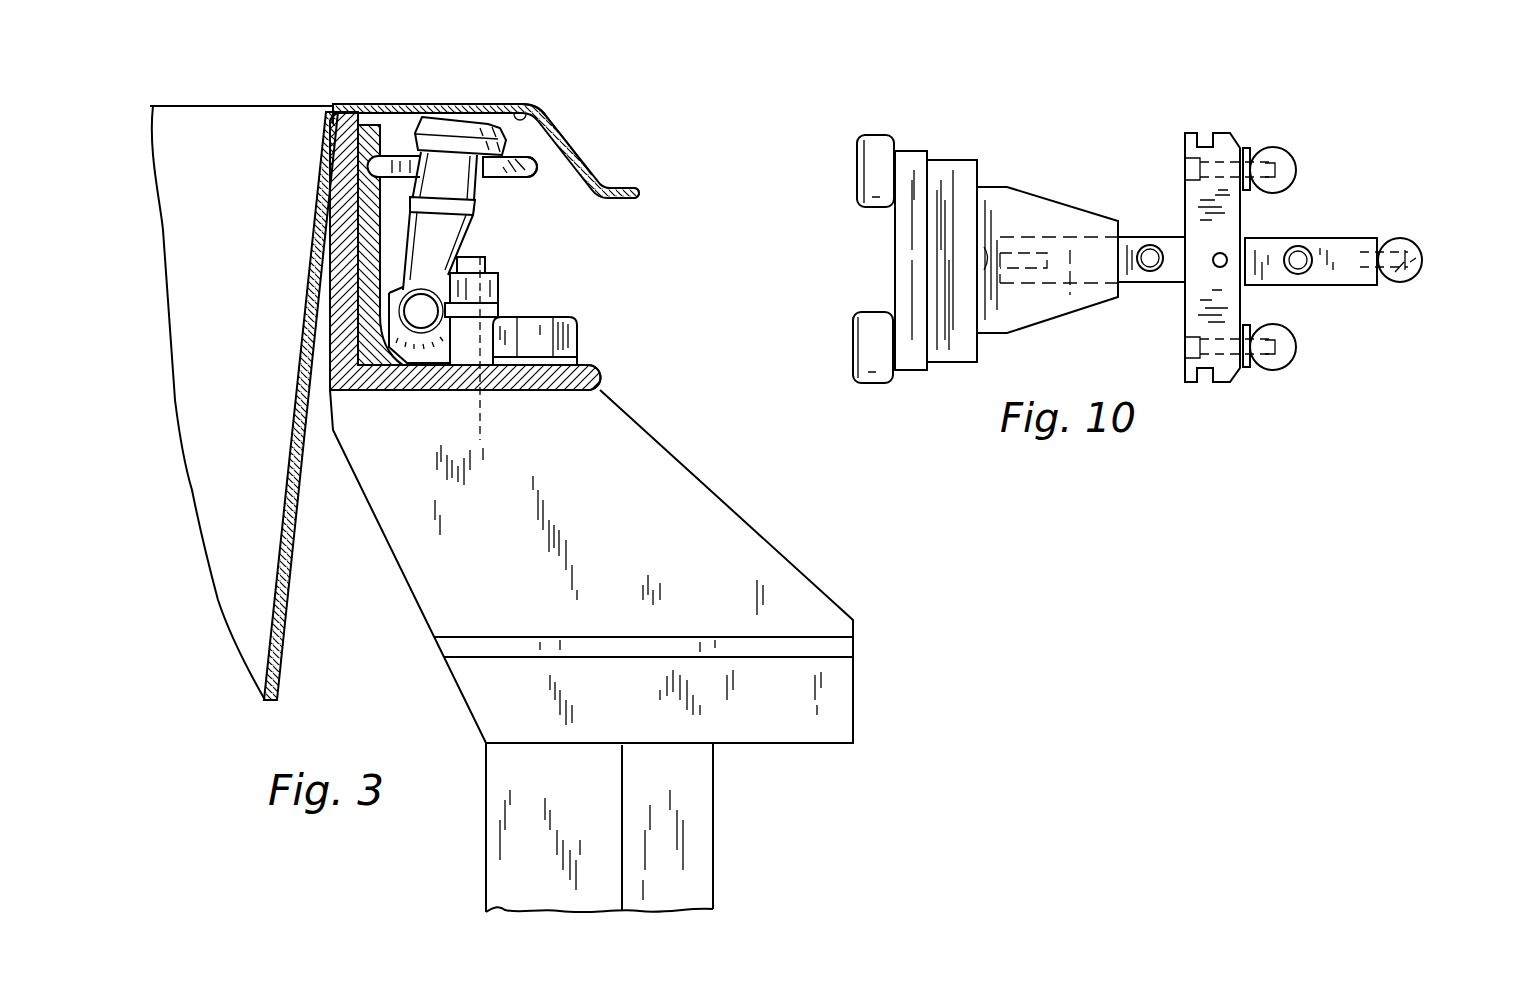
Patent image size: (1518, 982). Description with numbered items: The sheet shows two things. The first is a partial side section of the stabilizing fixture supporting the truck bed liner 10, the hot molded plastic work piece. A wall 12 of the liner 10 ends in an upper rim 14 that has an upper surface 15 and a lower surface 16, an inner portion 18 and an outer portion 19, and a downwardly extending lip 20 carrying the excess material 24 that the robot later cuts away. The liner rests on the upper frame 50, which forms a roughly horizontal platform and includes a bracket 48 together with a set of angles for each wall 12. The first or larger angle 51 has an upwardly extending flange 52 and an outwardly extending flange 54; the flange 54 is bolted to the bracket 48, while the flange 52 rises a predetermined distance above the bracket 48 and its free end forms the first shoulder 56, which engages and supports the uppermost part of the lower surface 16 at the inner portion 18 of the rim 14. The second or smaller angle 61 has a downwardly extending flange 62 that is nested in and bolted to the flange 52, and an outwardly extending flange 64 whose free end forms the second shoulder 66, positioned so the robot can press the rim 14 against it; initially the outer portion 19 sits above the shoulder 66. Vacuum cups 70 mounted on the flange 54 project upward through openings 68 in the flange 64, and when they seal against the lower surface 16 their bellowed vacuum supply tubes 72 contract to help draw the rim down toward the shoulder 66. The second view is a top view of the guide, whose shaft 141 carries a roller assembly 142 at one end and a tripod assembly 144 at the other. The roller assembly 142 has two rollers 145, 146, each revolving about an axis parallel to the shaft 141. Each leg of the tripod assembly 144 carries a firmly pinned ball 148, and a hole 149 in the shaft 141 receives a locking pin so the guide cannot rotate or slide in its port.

In FIG. 3, the truck bed liner 10 is at (298, 281).
In FIG. 3, the wall 12 is at (303, 385).
In FIG. 3, the upper rim 14 is at (380, 108).
In FIG. 3, the upper surface 15 is at (463, 104).
In FIG. 3, the lower surface 16 is at (532, 107).
In FIG. 3, the inner portion 18 is at (353, 110).
In FIG. 3, the outer portion 19 is at (548, 113).
In FIG. 3, the downwardly extending lip 20 is at (580, 148).
In FIG. 3, the excess material 24 is at (608, 188).
In FIG. 3, the bracket 48 is at (483, 320).
In FIG. 3, the upper frame 50 is at (609, 378).
In FIG. 3, the first angle 51 is at (390, 392).
In FIG. 3, the upwardly extending flange 52 is at (350, 237).
In FIG. 3, the outwardly extending flange 54 is at (570, 389).
In FIG. 3, the first shoulder 56 is at (345, 122).
In FIG. 3, the second angle 61 is at (373, 167).
In FIG. 3, the downwardly extending flange 62 is at (373, 202).
In FIG. 3, the outwardly extending flange 64 is at (503, 180).
In FIG. 3, the second shoulder 66 is at (537, 167).
In FIG. 3, the openings 68 is at (398, 152).
In FIG. 3, the vacuum cup 70 is at (487, 120).
In FIG. 3, the bellowed vacuum supply tube 72 is at (485, 175).
In FIG. 10, the shaft 141 is at (1172, 243).
In FIG. 10, the roller assembly 142 is at (962, 168).
In FIG. 10, the tripod assembly 144 is at (1238, 113).
In FIG. 10, the roller 145 is at (868, 328).
In FIG. 10, the roller 146 is at (880, 148).
In FIG. 10, the ball 148 is at (1282, 160).
In FIG. 10, the hole 149 is at (1303, 237).